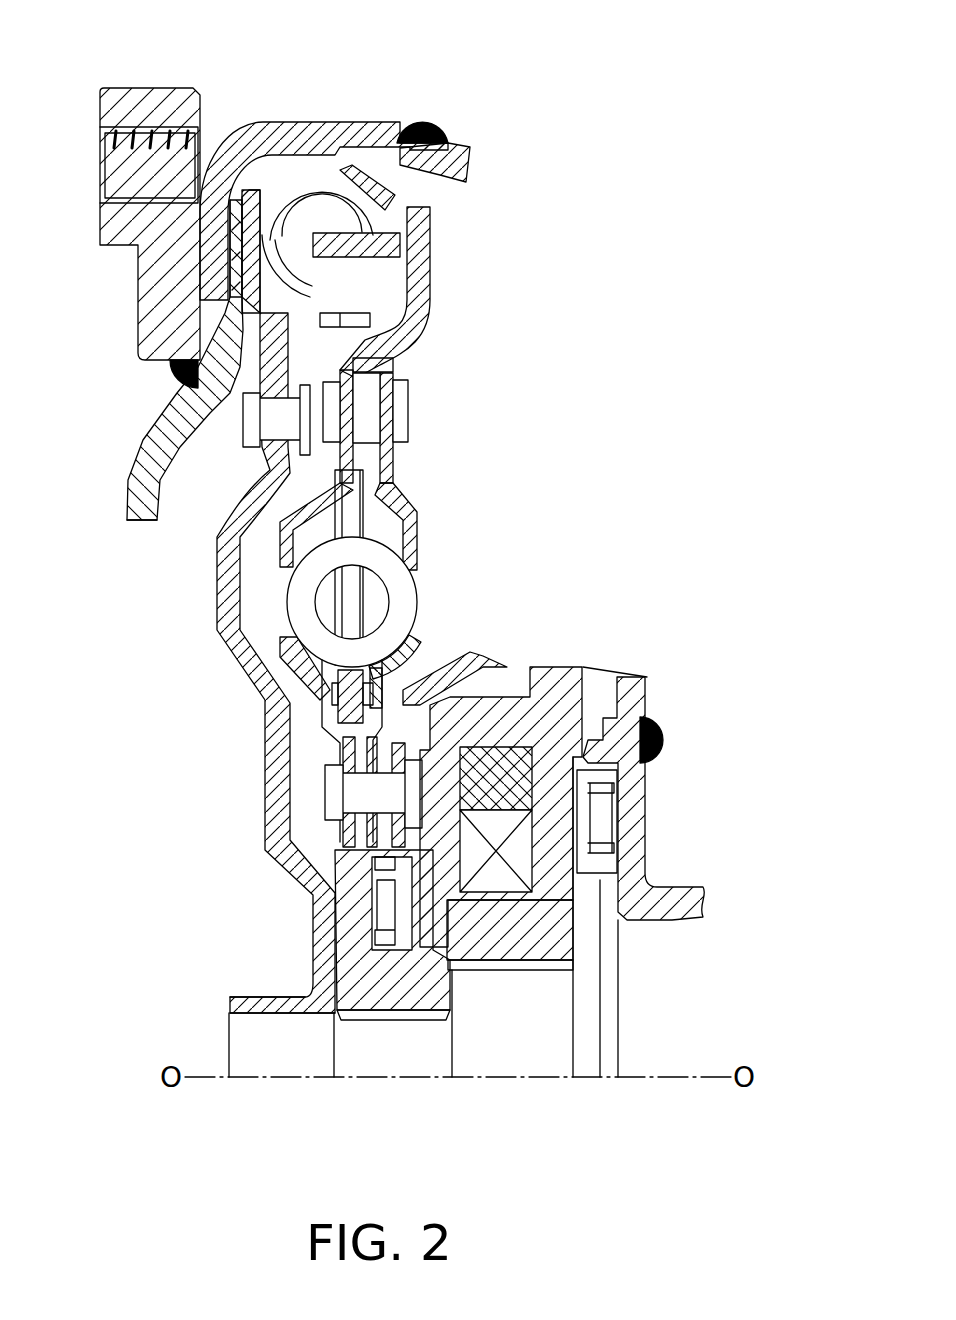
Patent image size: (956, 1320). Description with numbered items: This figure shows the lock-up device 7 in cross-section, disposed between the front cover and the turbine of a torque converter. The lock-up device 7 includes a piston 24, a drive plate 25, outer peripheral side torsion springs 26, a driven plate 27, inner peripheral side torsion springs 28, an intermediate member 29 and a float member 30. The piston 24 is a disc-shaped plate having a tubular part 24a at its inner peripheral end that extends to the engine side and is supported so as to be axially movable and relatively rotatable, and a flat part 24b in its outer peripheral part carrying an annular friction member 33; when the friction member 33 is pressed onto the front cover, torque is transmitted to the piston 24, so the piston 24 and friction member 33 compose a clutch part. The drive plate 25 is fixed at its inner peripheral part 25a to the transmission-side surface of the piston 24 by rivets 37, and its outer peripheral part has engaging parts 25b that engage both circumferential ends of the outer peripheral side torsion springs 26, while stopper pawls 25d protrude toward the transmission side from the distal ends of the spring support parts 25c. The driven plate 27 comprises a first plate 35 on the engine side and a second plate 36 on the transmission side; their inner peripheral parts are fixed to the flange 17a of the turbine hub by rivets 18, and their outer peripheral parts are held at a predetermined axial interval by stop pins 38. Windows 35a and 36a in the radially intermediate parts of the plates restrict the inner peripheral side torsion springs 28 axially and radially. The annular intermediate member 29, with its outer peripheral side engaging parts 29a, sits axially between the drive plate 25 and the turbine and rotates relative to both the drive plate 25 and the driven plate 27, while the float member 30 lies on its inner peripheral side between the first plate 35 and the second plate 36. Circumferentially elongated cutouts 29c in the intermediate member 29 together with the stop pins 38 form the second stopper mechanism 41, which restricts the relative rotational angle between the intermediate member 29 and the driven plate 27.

The lock-up device 7 is at (505, 258).
The flange 17a is at (345, 883).
The rivets 18 is at (325, 800).
The piston 24 is at (215, 570).
The tubular part 24a is at (275, 997).
The flat part 24b is at (262, 188).
The drive plate 25 is at (170, 365).
The inner peripheral part 25a is at (250, 480).
The engaging parts 25b is at (383, 130).
The spring support parts 25c is at (466, 150).
The stopper pawls 25d is at (372, 320).
The outer peripheral side torsion springs 26 is at (322, 195).
The driven plate 27 is at (300, 713).
The inner peripheral side torsion springs 28 is at (395, 595).
The intermediate member 29 is at (435, 322).
The outer peripheral side engaging parts 29a is at (390, 197).
The cutouts 29c is at (357, 378).
The float member 30 is at (365, 500).
The friction member 33 is at (228, 243).
The first plate 35 is at (290, 665).
The windows 35a is at (290, 575).
The second plate 36 is at (420, 648).
The windows 36a is at (410, 548).
The rivets 37 is at (255, 413).
The stop pins 38 is at (397, 405).
The second stopper mechanism 41 is at (430, 432).